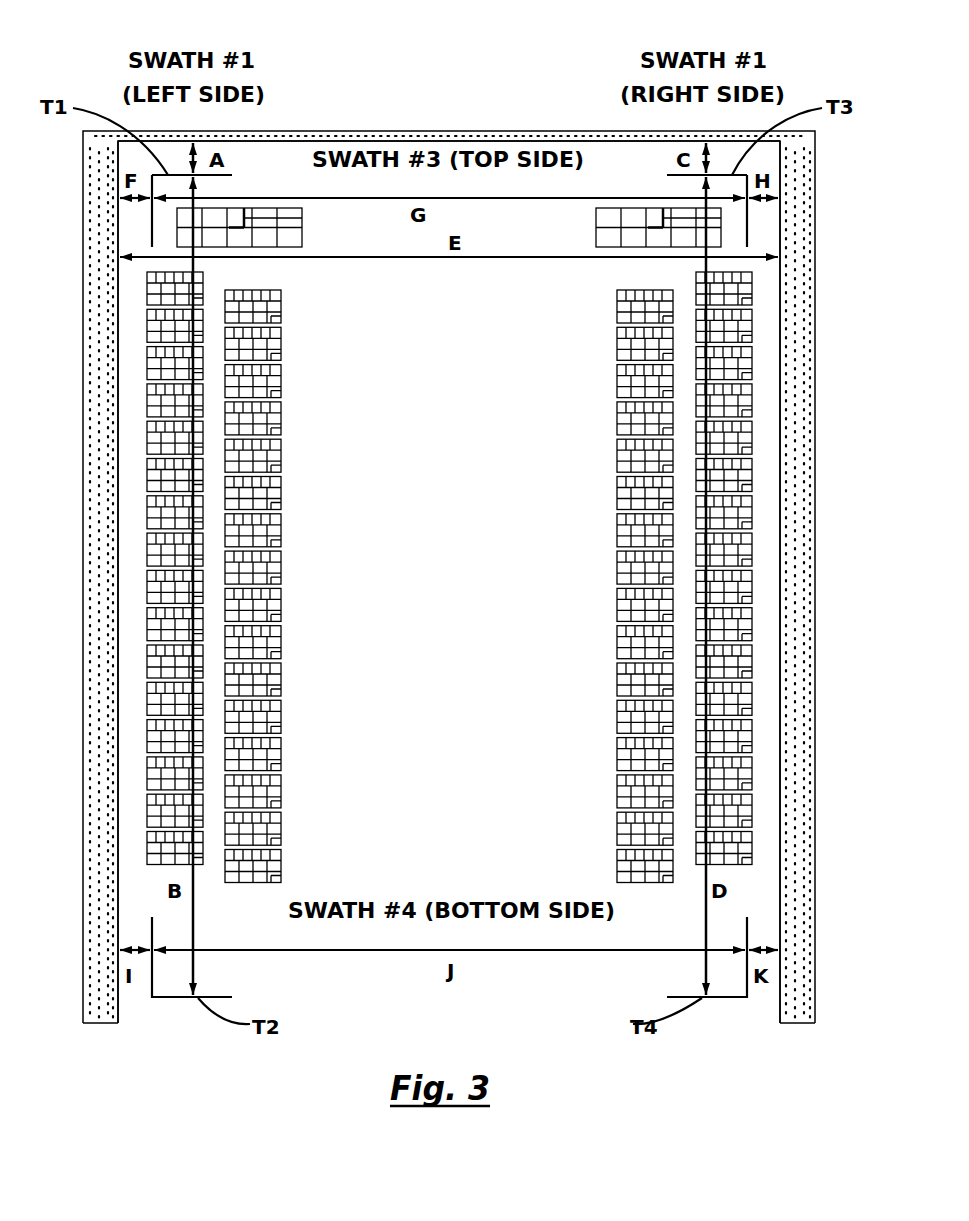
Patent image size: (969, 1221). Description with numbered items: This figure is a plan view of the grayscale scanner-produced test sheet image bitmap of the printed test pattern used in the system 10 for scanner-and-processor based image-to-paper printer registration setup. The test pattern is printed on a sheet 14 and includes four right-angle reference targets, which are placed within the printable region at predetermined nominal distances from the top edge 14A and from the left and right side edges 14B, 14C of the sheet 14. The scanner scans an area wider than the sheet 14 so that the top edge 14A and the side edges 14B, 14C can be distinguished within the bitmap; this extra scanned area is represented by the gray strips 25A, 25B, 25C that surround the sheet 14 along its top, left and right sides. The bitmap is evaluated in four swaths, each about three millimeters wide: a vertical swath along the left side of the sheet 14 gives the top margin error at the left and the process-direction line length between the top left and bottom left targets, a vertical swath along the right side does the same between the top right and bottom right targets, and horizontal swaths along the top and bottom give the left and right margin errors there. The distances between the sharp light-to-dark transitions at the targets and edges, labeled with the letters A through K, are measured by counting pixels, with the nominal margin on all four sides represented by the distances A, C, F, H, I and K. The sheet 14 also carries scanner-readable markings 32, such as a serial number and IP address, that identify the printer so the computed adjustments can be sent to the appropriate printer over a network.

The system 10 is at (536, 36).
The sheet 14 is at (531, 133).
The top edge 14A is at (335, 140).
The left side edge 14B is at (120, 393).
The right side edge 14C is at (780, 372).
The gray strip 25A is at (440, 131).
The gray strip 25B is at (108, 468).
The gray strip 25C is at (797, 458).
The scanner-readable markings 32 is at (475, 310).